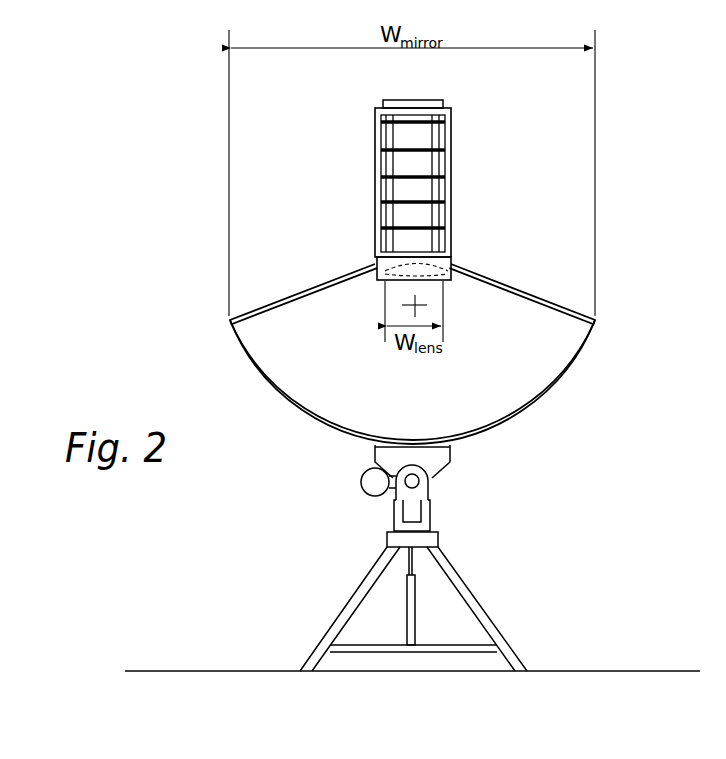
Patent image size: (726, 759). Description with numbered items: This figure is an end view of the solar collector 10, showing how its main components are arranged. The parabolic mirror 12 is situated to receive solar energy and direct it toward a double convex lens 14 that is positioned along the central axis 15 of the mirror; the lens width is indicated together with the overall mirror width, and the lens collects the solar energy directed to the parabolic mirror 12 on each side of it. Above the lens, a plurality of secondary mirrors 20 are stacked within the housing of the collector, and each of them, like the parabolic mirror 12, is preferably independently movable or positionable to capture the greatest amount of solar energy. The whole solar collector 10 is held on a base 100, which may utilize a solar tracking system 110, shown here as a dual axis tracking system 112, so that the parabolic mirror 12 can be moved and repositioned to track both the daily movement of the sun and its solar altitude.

The solar collector 10 is at (432, 190).
The parabolic mirror 12 is at (553, 390).
The double convex lens 14 is at (449, 272).
The central axis 15 is at (410, 298).
The secondary mirrors 20 is at (413, 138).
The base 100 is at (487, 572).
The solar tracking system 110 is at (347, 485).
The dual axis tracking system 112 is at (430, 505).